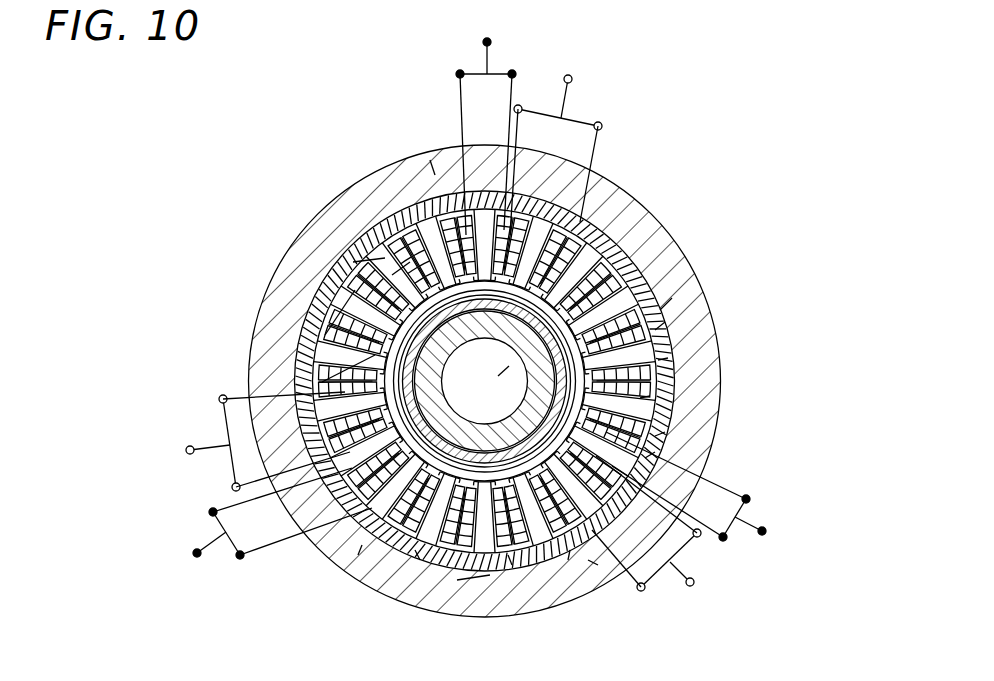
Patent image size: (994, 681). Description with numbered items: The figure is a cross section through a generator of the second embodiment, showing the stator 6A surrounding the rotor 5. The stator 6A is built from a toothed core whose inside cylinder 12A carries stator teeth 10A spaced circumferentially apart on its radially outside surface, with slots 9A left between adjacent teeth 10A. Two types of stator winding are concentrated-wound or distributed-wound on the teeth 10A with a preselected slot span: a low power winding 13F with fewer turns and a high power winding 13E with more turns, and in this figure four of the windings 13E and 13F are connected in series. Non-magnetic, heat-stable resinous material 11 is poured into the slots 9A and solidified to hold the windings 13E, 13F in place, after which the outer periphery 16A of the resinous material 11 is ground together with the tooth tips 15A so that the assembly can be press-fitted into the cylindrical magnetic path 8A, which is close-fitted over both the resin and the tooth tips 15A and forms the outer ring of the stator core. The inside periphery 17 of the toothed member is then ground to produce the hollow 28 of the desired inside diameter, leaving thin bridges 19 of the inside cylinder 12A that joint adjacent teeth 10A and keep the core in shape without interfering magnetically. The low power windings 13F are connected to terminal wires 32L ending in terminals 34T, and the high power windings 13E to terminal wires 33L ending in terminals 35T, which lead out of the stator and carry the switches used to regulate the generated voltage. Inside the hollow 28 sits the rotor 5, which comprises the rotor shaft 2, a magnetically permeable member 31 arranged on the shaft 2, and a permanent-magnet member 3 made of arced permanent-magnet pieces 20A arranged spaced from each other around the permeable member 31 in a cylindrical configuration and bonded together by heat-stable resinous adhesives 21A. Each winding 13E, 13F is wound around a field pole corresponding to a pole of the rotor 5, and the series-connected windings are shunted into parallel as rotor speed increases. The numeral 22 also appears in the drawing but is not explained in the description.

The rotor shaft 2 is at (512, 386).
The permanent-magnet member 3 is at (568, 560).
The rotor 5 is at (678, 357).
The stator 6A is at (672, 214).
The cylindrical magnetic path 8A is at (612, 205).
The slots 9A is at (650, 396).
The stator teeth 10A is at (665, 322).
The non-magnetic resinous material 11 is at (430, 160).
The inside cylinder 12A is at (665, 432).
The high power winding 13E is at (655, 452).
The low power winding 13F is at (375, 355).
The tooth tips 15A is at (668, 358).
The outer periphery of the resinous material 16A is at (385, 258).
The inside periphery 17 is at (485, 381).
The bridges 19 is at (640, 213).
The permanent-magnet pieces 20A is at (358, 555).
The resinous adhesives 21A is at (482, 409).
The air gap 22 is at (512, 565).
The hollow 28 is at (672, 298).
The magnetically permeable member 31 is at (542, 363).
The terminal wires 32L is at (460, 96).
The terminal wires 33L is at (594, 142).
The terminals 34T is at (492, 42).
The terminals 35T is at (572, 77).